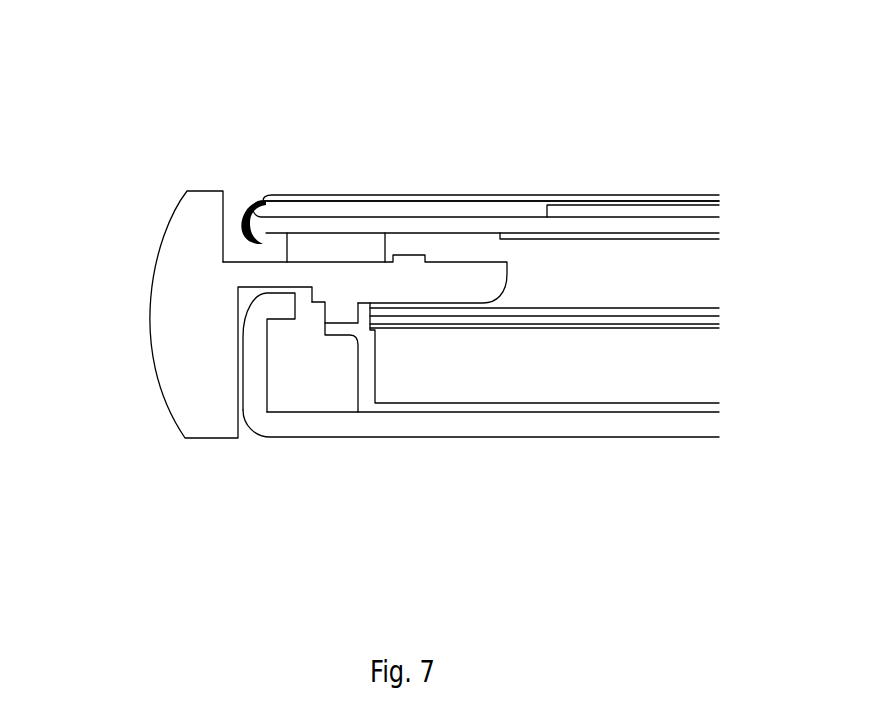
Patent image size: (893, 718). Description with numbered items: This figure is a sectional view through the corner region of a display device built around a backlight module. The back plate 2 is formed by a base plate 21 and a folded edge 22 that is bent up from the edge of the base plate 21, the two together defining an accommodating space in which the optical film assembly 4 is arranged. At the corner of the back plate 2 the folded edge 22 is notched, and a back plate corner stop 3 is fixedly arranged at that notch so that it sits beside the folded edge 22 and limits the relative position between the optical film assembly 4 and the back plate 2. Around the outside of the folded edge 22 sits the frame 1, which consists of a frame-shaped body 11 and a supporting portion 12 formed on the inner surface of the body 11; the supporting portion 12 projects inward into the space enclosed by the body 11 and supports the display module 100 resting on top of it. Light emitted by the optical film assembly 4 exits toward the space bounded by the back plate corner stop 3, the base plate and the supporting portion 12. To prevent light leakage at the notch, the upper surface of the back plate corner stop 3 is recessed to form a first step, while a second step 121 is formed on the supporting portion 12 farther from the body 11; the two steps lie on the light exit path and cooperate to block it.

The frame 1 is at (260, 88).
The frame-shaped body 11 is at (183, 257).
The supporting portion 12 is at (363, 283).
The second step 121 is at (345, 313).
The display module 100 is at (531, 179).
The back plate 2 is at (508, 550).
The base plate 21 is at (453, 428).
The folded edge 22 is at (257, 375).
The back plate corner stop 3 is at (325, 362).
The optical film assembly 4 is at (728, 366).